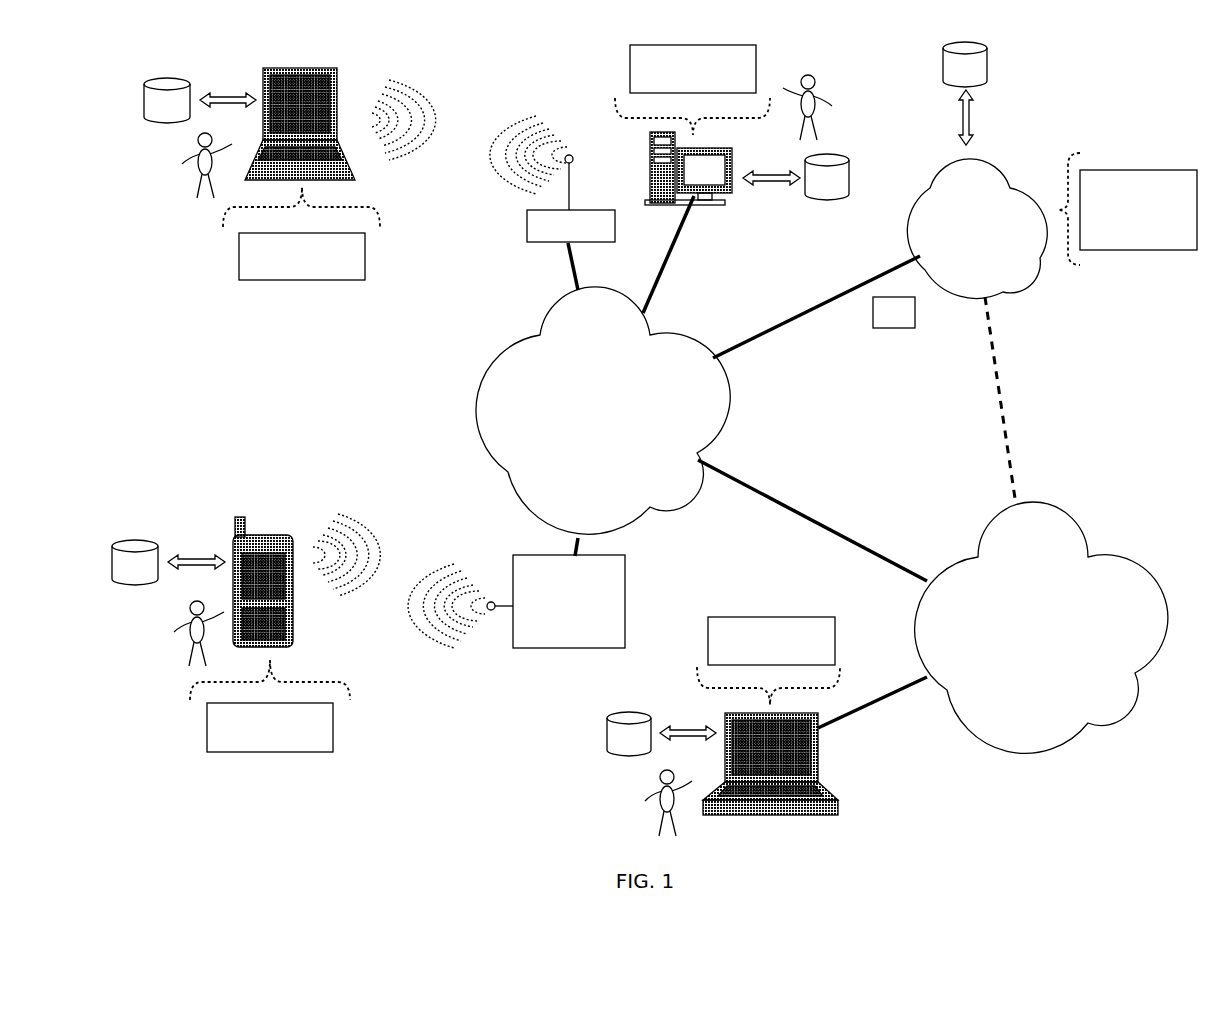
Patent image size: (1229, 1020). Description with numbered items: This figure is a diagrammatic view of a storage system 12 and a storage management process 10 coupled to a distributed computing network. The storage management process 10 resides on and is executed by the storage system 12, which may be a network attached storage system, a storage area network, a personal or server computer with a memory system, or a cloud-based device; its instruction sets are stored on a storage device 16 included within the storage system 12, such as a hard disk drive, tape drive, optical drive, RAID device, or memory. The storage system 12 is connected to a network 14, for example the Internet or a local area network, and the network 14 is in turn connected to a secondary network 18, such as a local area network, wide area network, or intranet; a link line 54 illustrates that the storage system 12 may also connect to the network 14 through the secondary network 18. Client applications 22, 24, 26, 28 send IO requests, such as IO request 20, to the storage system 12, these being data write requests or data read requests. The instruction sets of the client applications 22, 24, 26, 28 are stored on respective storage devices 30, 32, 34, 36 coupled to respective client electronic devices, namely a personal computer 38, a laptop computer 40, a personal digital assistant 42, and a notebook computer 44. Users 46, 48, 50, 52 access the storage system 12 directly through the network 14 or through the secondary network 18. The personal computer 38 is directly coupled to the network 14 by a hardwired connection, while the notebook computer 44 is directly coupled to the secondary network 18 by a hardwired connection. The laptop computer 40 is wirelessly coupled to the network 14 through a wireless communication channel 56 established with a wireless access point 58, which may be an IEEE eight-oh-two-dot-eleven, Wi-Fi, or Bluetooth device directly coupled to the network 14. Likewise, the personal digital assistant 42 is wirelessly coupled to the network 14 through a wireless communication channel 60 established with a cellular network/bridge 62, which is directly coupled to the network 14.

The storage management process 10 is at (1197, 200).
The storage system 12 is at (977, 229).
The network 14 is at (603, 410).
The storage device 16 is at (965, 93).
The secondary network 18 is at (1041, 627).
The IO request 20 is at (915, 312).
The client application 22 is at (757, 72).
The client application 24 is at (367, 252).
The client application 26 is at (335, 720).
The client application 28 is at (835, 640).
The storage device 30 is at (796, 177).
The storage device 32 is at (200, 100).
The storage device 34 is at (168, 562).
The storage device 36 is at (661, 734).
The personal computer 38 is at (732, 170).
The laptop computer 40 is at (333, 92).
The personal digital assistant 42 is at (297, 588).
The notebook computer 44 is at (818, 758).
The user 46 is at (827, 88).
The user 48 is at (172, 155).
The user 50 is at (175, 615).
The user 52 is at (633, 795).
The link line 54 is at (992, 385).
The wireless communication channel 56 is at (477, 110).
The wireless access point 58 is at (525, 228).
The wireless communication channel 60 is at (408, 556).
The cellular network/bridge 62 is at (625, 570).